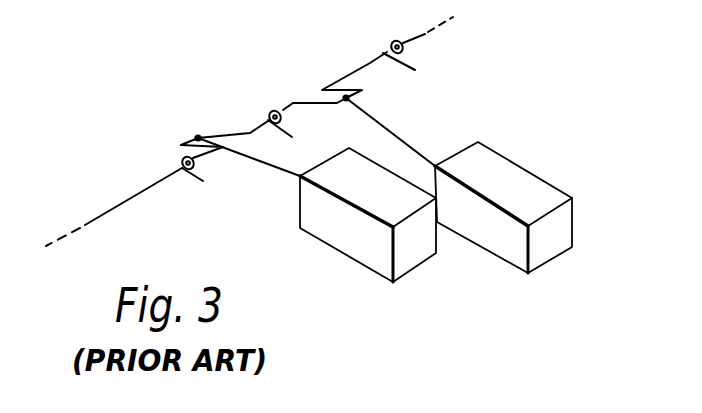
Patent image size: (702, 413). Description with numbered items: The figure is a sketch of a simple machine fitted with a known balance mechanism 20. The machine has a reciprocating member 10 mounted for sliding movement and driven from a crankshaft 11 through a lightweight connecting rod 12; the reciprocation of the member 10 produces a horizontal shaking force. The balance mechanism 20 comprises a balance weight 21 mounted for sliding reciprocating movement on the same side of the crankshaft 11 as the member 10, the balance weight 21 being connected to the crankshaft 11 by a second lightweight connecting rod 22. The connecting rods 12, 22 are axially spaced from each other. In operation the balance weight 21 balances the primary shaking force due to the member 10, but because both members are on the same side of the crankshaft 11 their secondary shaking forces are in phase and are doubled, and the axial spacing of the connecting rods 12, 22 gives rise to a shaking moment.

The reciprocating member 10 is at (492, 232).
The crankshaft 11 is at (355, 70).
The connecting rod 12 is at (402, 136).
The balance mechanism 20 is at (317, 247).
The balance weight 21 is at (340, 240).
The connecting rod 22 is at (250, 162).